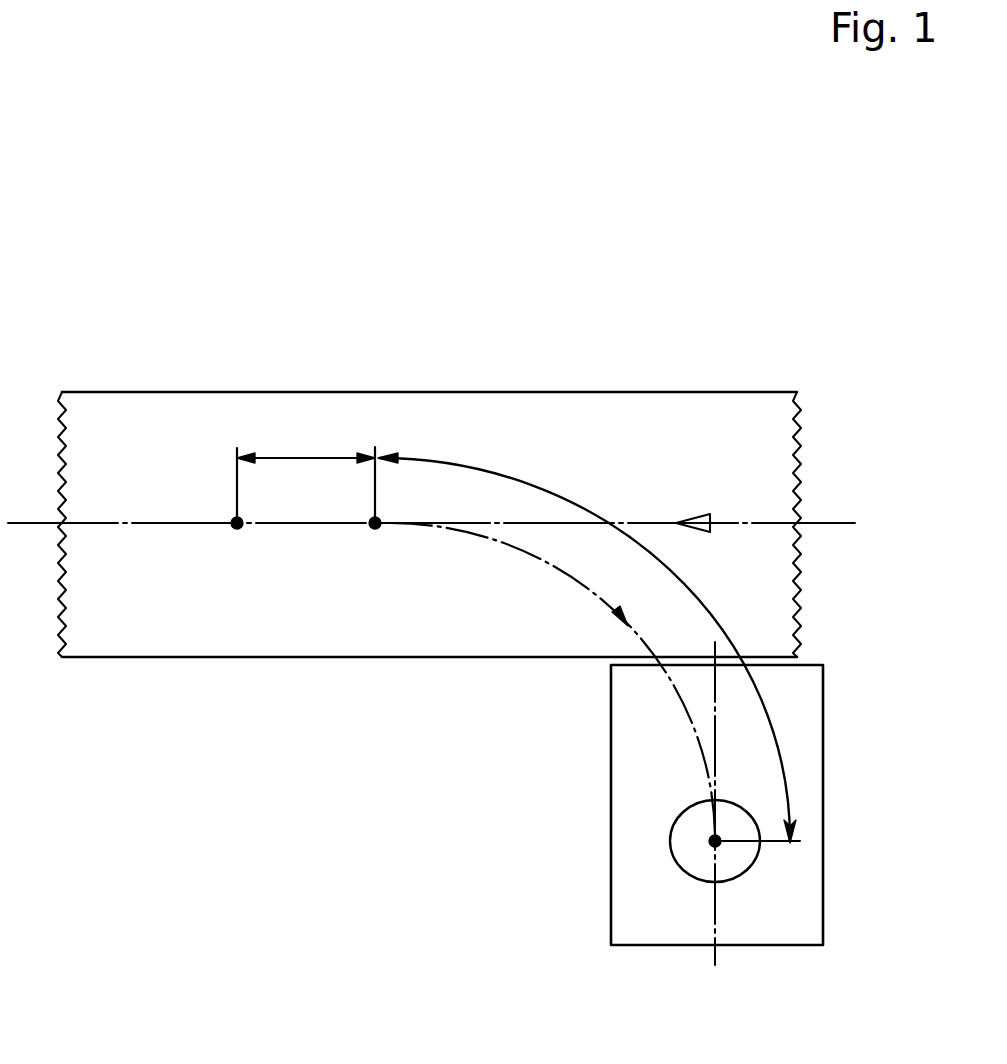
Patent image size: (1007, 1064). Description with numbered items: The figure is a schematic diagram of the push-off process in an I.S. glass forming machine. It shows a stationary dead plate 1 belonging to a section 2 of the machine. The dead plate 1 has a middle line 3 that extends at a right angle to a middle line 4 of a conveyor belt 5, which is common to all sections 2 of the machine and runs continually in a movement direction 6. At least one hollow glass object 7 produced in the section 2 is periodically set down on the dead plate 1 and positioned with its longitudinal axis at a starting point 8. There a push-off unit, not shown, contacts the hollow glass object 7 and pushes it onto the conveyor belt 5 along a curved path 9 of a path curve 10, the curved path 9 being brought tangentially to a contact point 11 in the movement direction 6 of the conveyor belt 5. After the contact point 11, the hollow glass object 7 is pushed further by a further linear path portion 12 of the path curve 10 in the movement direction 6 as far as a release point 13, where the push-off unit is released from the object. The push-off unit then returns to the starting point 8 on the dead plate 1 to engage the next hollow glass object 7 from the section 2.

The dead plate 1 is at (787, 923).
The section 2 is at (833, 708).
The middle line 3 is at (715, 955).
The middle line 4 is at (840, 523).
The conveyor belt 5 is at (780, 425).
The movement direction 6 is at (728, 522).
The hollow glass object 7 is at (733, 862).
The starting point 8 is at (683, 870).
The curved path 9 is at (705, 607).
The path curve 10 is at (545, 562).
The contact point 11 is at (378, 528).
The further linear path portion 12 is at (285, 458).
The release point 13 is at (240, 528).